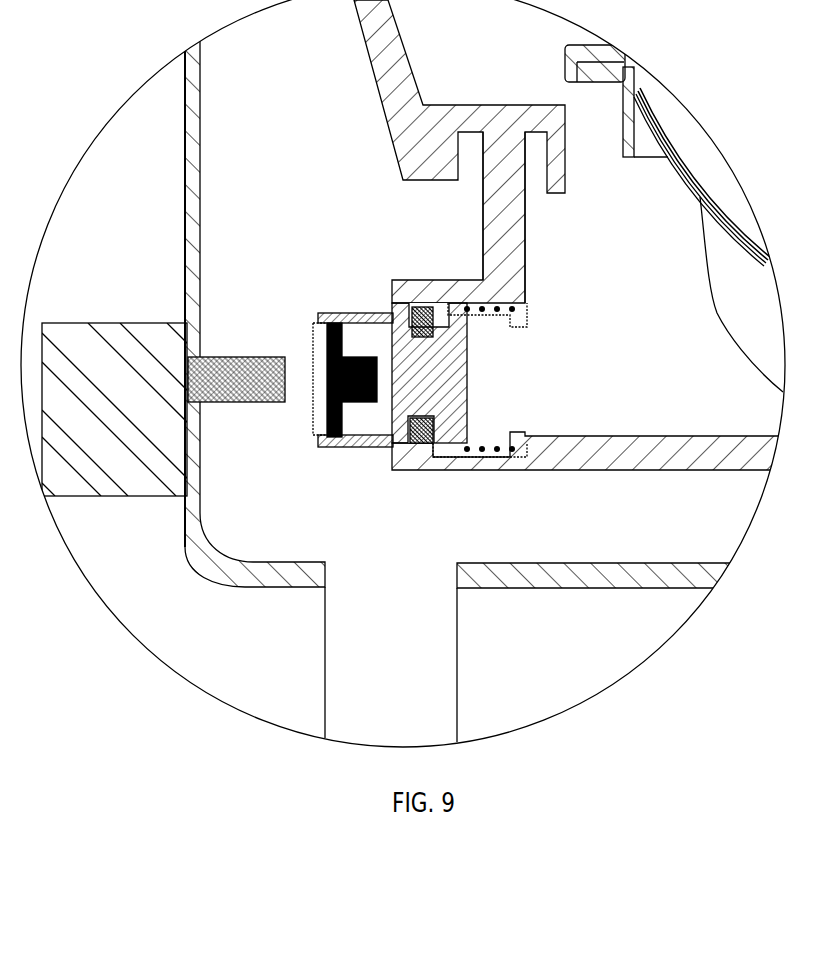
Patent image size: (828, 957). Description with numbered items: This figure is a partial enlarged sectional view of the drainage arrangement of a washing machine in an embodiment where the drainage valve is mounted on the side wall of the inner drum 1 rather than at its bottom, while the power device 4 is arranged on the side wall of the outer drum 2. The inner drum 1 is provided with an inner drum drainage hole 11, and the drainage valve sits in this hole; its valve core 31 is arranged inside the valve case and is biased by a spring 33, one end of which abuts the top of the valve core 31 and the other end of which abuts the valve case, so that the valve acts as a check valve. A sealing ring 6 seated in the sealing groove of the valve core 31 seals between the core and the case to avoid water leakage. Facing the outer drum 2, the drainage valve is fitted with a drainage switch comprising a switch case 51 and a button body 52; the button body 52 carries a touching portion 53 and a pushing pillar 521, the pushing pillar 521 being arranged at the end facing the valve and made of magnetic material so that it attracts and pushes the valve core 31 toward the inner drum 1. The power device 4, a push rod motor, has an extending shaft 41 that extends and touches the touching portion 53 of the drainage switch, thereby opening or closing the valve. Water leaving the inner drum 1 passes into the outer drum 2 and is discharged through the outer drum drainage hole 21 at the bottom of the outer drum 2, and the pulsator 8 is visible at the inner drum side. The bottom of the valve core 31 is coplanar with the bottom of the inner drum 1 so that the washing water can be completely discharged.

The inner drum 1 is at (383, 67).
The outer drum 2 is at (202, 170).
The power device 4 is at (120, 336).
The extending shaft 41 is at (237, 366).
The switch case 51 is at (326, 314).
The button body 52 is at (336, 447).
The pushing pillar 521 is at (366, 358).
The touching portion 53 is at (330, 442).
The inner drum drainage hole 11 is at (517, 340).
The valve core 31 is at (462, 400).
The spring 33 is at (528, 325).
The sealing ring 6 is at (415, 442).
The pulsator 8 is at (742, 296).
The outer drum drainage hole 21 is at (435, 586).